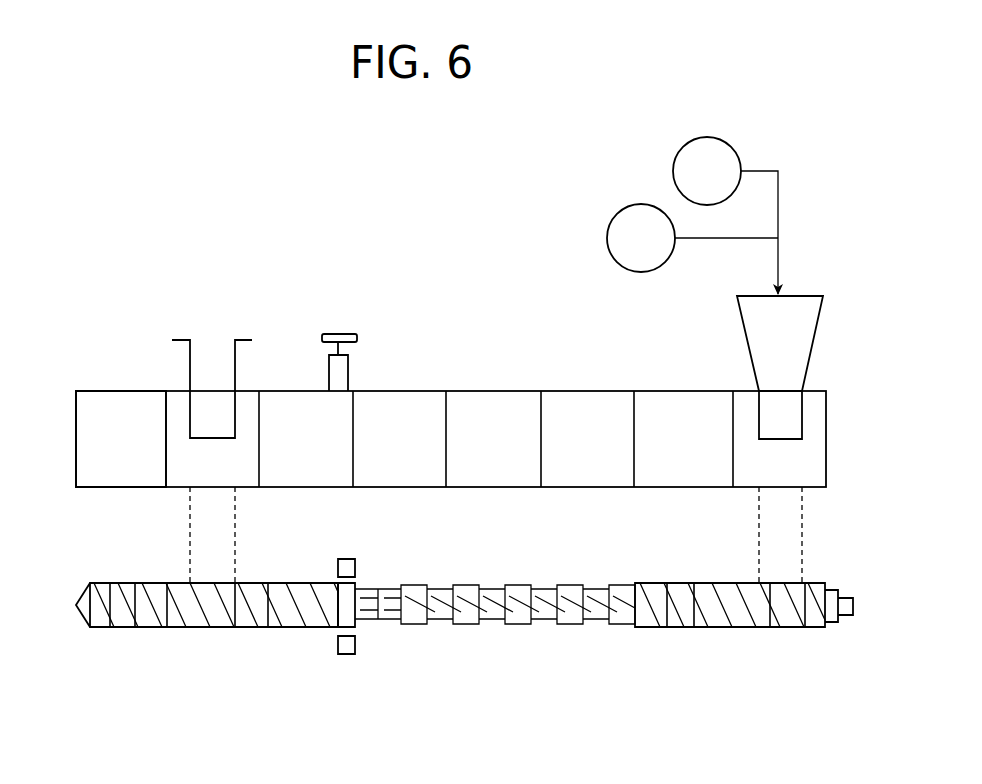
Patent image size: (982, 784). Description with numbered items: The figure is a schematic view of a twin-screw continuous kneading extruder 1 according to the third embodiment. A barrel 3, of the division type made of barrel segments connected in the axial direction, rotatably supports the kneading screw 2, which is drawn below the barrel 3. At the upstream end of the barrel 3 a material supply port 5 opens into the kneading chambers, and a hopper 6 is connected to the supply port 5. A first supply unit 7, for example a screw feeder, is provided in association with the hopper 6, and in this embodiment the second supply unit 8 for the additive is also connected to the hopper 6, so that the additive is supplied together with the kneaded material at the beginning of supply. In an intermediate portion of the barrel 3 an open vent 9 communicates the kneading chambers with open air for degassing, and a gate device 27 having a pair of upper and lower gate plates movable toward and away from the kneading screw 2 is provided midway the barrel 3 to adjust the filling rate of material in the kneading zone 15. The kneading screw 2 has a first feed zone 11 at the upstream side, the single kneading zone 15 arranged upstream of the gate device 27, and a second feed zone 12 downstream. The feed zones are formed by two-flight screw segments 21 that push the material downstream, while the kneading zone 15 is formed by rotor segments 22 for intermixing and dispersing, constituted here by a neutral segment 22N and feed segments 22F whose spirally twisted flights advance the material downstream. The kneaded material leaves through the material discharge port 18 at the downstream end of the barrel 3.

The kneading extruder 1 is at (450, 312).
The kneading screw 2 is at (464, 628).
The barrel 3 is at (575, 386).
The material supply port 5 is at (795, 428).
The hopper 6 is at (787, 350).
The first supply unit 7 is at (715, 186).
The second supply unit 8 is at (649, 253).
The open vent 9 is at (190, 360).
The first feed zone 11 is at (825, 633).
The second feed zone 12 is at (90, 633).
The kneading zone 15 is at (495, 628).
The material discharge port 18 is at (76, 425).
The screw segment 21 is at (290, 627).
The rotor segment 22 is at (495, 602).
The neutral segment 22N is at (390, 619).
The feed segment 22F is at (635, 633).
The gate device 27 is at (348, 368).